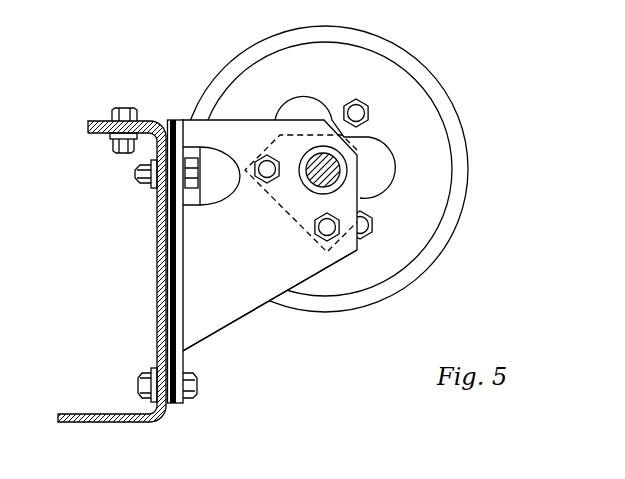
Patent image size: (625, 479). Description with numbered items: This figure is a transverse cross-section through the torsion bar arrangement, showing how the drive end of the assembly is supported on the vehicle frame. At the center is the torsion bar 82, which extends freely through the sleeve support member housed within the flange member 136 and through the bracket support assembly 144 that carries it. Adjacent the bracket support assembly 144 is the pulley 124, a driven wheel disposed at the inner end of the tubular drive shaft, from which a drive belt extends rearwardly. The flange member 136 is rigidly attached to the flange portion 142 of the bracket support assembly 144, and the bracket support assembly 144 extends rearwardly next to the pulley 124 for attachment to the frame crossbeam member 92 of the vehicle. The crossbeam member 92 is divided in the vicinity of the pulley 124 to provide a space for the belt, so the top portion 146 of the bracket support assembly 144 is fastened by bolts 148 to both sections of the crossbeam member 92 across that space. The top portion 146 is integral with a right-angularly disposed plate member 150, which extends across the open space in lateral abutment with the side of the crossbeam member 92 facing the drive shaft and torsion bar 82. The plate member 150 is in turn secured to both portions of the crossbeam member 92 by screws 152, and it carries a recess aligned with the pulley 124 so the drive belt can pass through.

The torsion bar 82 is at (330, 177).
The frame crossbeam member 92 is at (68, 413).
The pulley 124 is at (435, 155).
The flange member 136 is at (284, 212).
The flange portion 142 is at (242, 297).
The bracket support assembly 144 is at (224, 338).
The top portion of bracket support assembly 146 is at (100, 121).
The bolts 148 is at (127, 110).
The plate member 150 is at (167, 258).
The screws 152 is at (135, 178).